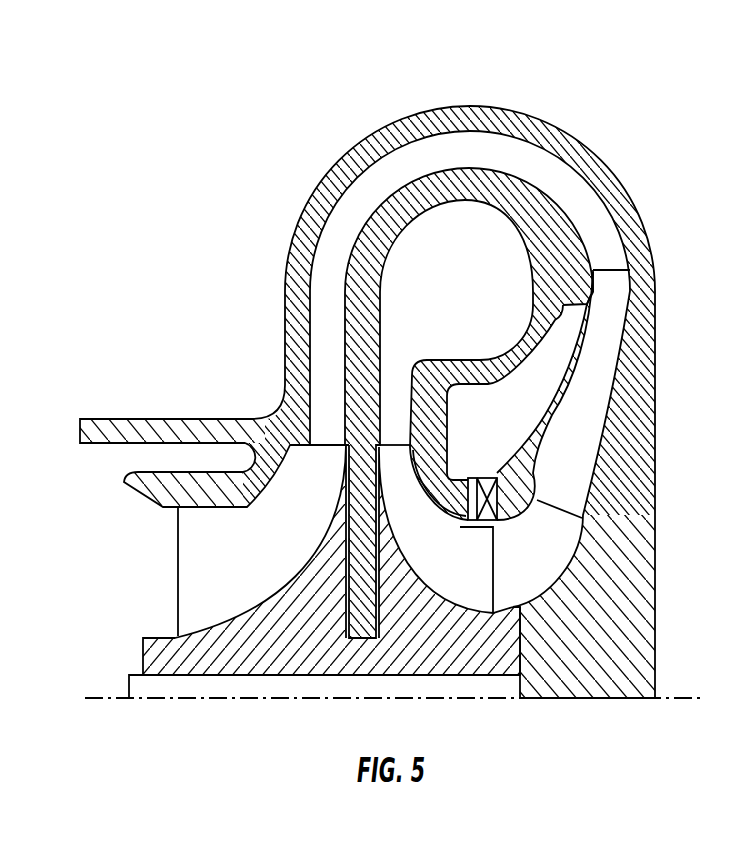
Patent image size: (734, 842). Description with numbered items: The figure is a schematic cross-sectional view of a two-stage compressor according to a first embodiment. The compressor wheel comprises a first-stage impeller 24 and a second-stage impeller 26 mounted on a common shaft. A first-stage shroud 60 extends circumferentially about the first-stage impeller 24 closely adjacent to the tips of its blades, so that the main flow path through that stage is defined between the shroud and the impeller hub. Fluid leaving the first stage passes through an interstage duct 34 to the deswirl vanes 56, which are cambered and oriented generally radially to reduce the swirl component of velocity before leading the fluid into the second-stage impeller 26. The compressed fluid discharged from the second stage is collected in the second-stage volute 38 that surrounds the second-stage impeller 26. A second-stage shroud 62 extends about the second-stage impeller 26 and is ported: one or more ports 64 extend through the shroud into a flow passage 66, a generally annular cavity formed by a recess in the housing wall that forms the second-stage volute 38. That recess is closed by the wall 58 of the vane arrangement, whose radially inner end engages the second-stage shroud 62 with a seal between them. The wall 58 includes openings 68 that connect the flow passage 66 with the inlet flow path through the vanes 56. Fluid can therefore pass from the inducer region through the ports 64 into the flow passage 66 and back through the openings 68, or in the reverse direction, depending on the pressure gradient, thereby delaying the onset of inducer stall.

The first-stage impeller 24 is at (172, 642).
The second-stage impeller 26 is at (472, 678).
The interstage duct 34 is at (397, 170).
The second-stage volute 38 is at (473, 225).
The deswirl vanes 56 is at (612, 302).
The wall of the vane arrangement 58 is at (520, 513).
The first-stage shroud 60 is at (272, 495).
The second-stage shroud 62 is at (455, 475).
The port 64 is at (505, 477).
The flow passage 66 is at (473, 403).
The opening 68 is at (618, 380).